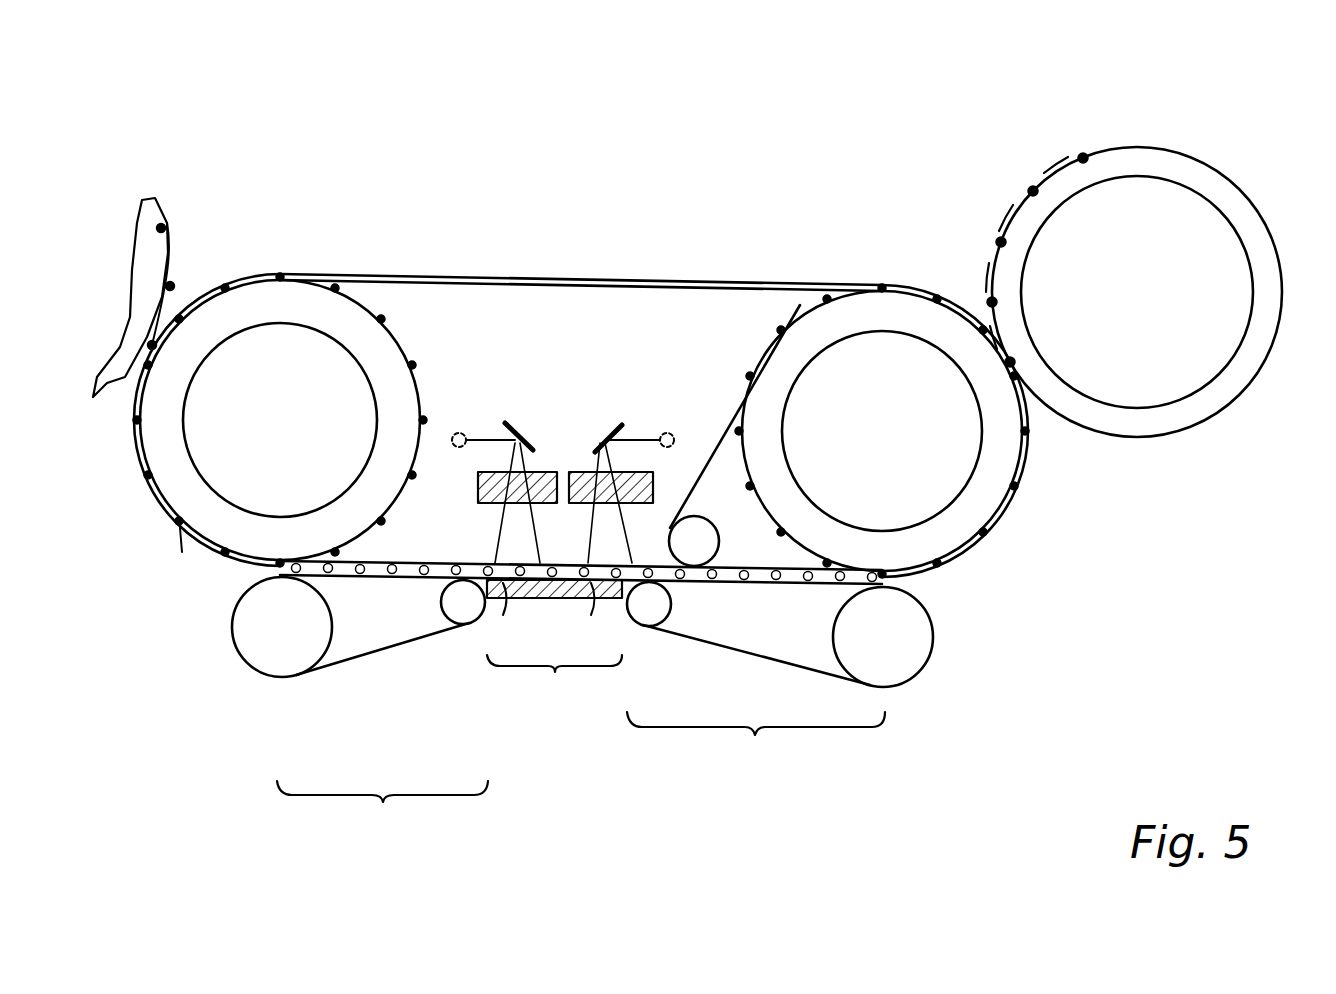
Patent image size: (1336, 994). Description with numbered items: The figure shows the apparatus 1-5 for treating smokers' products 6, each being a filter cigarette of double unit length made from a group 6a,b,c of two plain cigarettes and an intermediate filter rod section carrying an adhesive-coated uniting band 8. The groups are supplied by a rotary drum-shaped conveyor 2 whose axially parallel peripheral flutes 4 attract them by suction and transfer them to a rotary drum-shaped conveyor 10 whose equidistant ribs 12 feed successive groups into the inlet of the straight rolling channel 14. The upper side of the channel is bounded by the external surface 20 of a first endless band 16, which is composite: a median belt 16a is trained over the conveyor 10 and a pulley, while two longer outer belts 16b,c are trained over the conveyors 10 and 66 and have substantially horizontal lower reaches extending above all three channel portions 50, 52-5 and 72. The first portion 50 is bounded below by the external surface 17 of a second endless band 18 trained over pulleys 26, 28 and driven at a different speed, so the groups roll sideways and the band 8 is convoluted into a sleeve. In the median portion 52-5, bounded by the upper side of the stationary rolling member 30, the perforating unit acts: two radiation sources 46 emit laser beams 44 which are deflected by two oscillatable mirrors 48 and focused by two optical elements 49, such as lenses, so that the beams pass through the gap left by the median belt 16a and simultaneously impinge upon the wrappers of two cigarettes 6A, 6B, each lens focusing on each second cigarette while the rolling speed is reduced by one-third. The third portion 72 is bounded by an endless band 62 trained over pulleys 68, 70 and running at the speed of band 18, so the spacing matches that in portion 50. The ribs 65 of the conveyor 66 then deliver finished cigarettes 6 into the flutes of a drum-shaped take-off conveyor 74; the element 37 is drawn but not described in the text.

The apparatus 1-5 is at (697, 126).
The rotary drum-shaped conveyor 2 is at (1186, 370).
The peripheral flutes 4 is at (1280, 318).
The smokers' product 6 is at (165, 222).
The group of coaxial rod-shaped articles 6a,b,c is at (1078, 140).
The cigarette of double unit length 6A is at (591, 623).
The cigarette of double unit length 6B is at (508, 623).
The uniting band 8 is at (1112, 142).
The rotary drum-shaped conveyor 10 is at (918, 500).
The ribs 12 is at (1020, 478).
The rolling channel 14 is at (765, 585).
The first endless band 16 is at (1030, 455).
The median belt 16a is at (700, 536).
The outer belts 16b,c is at (590, 290).
The external surface of the second band 17 is at (673, 578).
The second endless band 18 is at (837, 678).
The external surface of the first band 20 is at (820, 584).
The pulley 26 is at (913, 660).
The pulley 28 is at (652, 614).
The stationary rolling member 30 is at (540, 600).
The roller 37 is at (742, 523).
The laser beams 44 is at (536, 522).
The radiation sources 46 is at (458, 432).
The oscillatable mirrors 48 is at (517, 422).
The optical elements 49 is at (478, 488).
The first portion of the rolling channel 50 is at (756, 740).
The median portion of the rolling channel 52-5 is at (554, 683).
The endless band 62 is at (389, 652).
The ribs 65 is at (177, 568).
The rotary drum-shaped conveyor 66 is at (278, 350).
The pulley 68 is at (285, 657).
The pulley 70 is at (450, 604).
The third portion of the rolling channel 72 is at (382, 813).
The take-off conveyor 74 is at (150, 258).